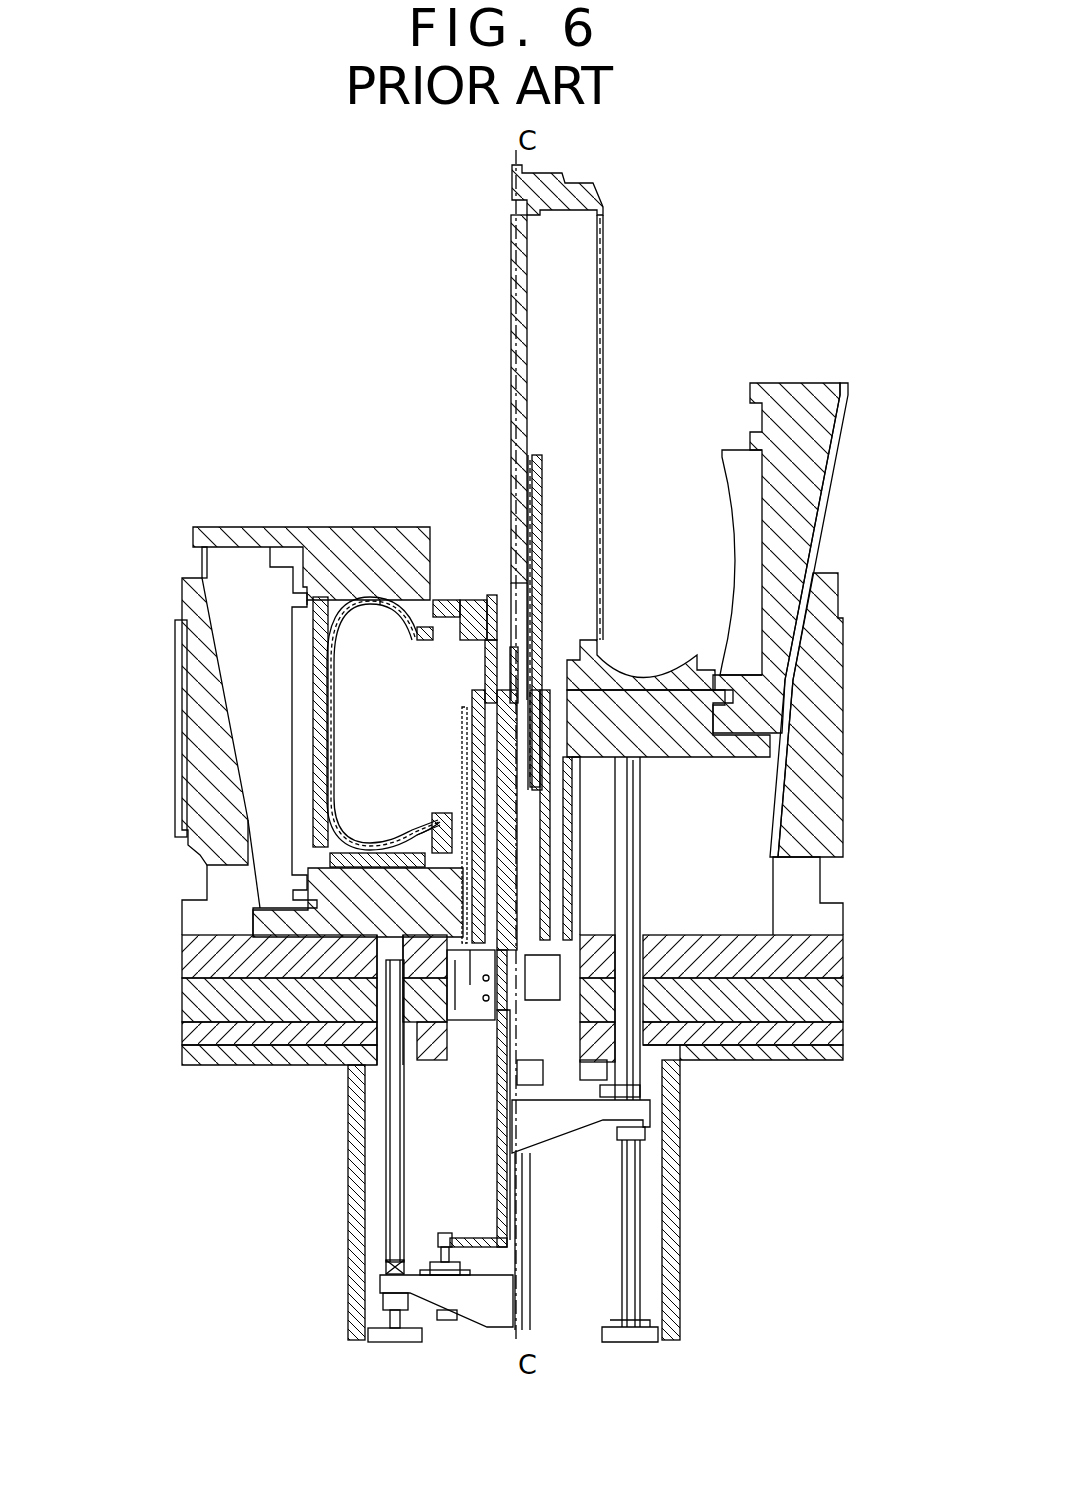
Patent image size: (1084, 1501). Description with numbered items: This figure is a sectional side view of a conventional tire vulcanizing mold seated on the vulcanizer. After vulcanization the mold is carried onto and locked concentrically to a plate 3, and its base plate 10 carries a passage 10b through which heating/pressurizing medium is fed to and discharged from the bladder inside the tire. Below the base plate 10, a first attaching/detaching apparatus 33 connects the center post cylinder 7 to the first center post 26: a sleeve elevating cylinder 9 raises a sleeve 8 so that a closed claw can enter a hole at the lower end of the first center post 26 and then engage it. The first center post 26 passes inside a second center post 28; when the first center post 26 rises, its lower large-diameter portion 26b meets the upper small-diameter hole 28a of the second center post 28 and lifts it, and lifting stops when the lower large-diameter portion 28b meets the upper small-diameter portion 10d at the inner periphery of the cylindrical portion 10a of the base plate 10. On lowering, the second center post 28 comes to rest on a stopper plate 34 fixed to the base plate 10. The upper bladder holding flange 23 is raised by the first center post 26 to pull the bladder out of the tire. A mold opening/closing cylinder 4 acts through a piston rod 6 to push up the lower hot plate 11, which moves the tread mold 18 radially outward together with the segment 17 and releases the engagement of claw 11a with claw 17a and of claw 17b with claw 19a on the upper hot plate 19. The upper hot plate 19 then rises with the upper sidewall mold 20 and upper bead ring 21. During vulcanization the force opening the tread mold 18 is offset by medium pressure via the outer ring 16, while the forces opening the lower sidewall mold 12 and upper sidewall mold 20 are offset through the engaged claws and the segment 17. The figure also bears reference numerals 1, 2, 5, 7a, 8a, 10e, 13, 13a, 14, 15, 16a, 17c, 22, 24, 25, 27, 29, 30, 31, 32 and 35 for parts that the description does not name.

The frame 1 is at (348, 1160).
The base plate 2 is at (182, 1033).
The plate 3 is at (182, 998).
The mold opening/closing cylinder 4 is at (380, 1337).
The bracket 5 is at (392, 1283).
The piston rod 6 is at (388, 1183).
The center post cylinder 7 is at (497, 1325).
The rod 7a is at (497, 1157).
The sleeve 8 is at (503, 1178).
The nut 8a is at (480, 1237).
The sleeve elevating cylinder 9 is at (432, 1262).
The base plate 10 is at (182, 962).
The cylindrical portion 10a is at (470, 760).
The passage 10b is at (562, 857).
The upper small-diameter portion 10d is at (572, 762).
The housing hole 10e is at (378, 960).
The lower hot plate 11 is at (337, 912).
The claw 11a is at (303, 883).
The lower sidewall mold 12 is at (317, 833).
The ring 13 is at (355, 853).
The ring projection 13a is at (437, 818).
The seal 14 is at (423, 827).
The upper rim flange 15 is at (207, 860).
The outer ring 16 is at (203, 735).
The upper rim portion 16a is at (773, 787).
The segment 17 is at (245, 700).
The claw 17a is at (307, 902).
The claw 17b is at (300, 557).
The support portion 17c is at (830, 522).
The tread mold 18 is at (180, 680).
The upper hot plate 19 is at (337, 540).
The claw 19a is at (207, 575).
The upper sidewall mold 20 is at (350, 597).
The upper bead ring 21 is at (403, 600).
The clamp 22 is at (403, 597).
The upper bladder holding flange 23 is at (453, 615).
The clamp ring 24 is at (463, 610).
The seal 25 is at (488, 600).
The first center post 26 is at (470, 683).
The lower large-diameter portion 26b is at (545, 518).
The bladder end 27 is at (467, 653).
The second center post 28 is at (470, 725).
The upper small-diameter hole 28a is at (542, 490).
The lower large-diameter portion 28b is at (562, 790).
The cylinder 29 is at (470, 703).
The ring 30 is at (480, 668).
The seal ring 31 is at (470, 740).
The lower disc 32 is at (457, 913).
The first attaching/detaching apparatus 33 is at (488, 1024).
The stopper plate 34 is at (530, 1050).
The center post 35 is at (563, 581).